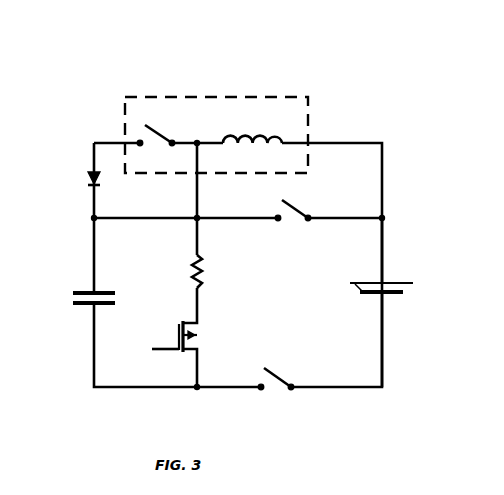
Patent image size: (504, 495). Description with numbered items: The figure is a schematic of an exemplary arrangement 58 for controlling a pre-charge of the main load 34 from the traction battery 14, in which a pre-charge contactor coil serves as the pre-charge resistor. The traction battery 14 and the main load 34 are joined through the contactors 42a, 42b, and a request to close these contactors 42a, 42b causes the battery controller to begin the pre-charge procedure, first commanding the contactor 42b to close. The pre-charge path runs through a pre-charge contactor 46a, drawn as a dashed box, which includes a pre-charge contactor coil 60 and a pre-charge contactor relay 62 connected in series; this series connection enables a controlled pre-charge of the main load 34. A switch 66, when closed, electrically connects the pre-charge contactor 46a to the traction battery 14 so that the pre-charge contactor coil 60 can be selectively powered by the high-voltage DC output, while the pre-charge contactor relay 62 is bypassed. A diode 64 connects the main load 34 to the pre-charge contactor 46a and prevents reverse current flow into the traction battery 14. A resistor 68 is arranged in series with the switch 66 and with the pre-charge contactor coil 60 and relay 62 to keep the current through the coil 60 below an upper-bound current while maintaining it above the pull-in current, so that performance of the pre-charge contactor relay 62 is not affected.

The exemplary arrangement 58 is at (350, 64).
The pre-charge contactor 46a is at (198, 83).
The pre-charge contactor relay 62 is at (157, 135).
The pre-charge contactor coil 60 is at (245, 135).
The diode 64 is at (93, 174).
The resistor 68 is at (197, 259).
The switch 66 is at (175, 345).
The contactor 42a is at (302, 219).
The contactor 42b is at (272, 365).
The main load 34 is at (93, 290).
The traction battery 14 is at (395, 280).